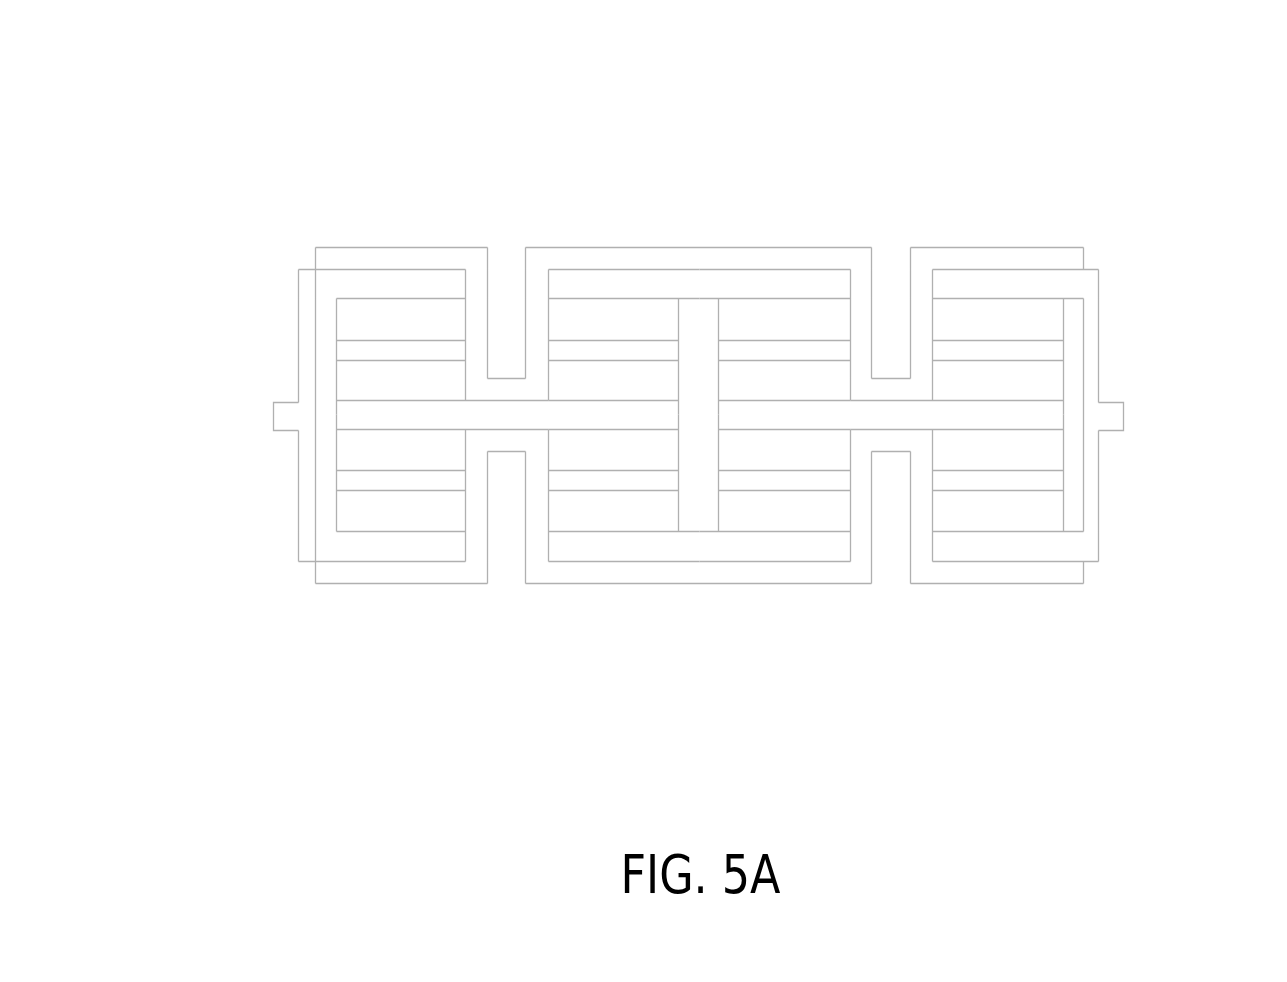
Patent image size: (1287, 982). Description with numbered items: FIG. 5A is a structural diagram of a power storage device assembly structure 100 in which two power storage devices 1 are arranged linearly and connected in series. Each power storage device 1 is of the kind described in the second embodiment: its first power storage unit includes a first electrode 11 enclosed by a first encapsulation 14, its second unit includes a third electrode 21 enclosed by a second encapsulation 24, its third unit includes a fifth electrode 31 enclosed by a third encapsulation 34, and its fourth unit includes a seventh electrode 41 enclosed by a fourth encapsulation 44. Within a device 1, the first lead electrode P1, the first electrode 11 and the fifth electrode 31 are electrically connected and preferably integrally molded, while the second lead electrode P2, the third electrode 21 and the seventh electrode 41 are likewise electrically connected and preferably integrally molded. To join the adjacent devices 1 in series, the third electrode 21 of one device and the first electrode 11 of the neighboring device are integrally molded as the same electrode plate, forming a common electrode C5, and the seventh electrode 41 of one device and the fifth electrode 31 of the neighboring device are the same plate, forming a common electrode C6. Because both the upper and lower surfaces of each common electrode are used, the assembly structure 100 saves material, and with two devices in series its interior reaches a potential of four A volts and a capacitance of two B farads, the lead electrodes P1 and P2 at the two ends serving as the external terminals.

The power storage device 1 is at (390, 223).
The first electrode 11 is at (820, 283).
The third electrode 21 is at (585, 287).
The first encapsulation 14 is at (707, 325).
The second encapsulation 24 is at (690, 325).
The third encapsulation 34 is at (713, 508).
The fourth encapsulation 44 is at (687, 508).
The fifth electrode 31 is at (805, 548).
The seventh electrode 41 is at (568, 548).
The first lead electrode P1 is at (285, 415).
The second lead electrode P2 is at (1115, 413).
The common electrode C5 is at (858, 98).
The common electrode C6 is at (590, 747).
The power storage device assembly structure 100 is at (1155, 720).